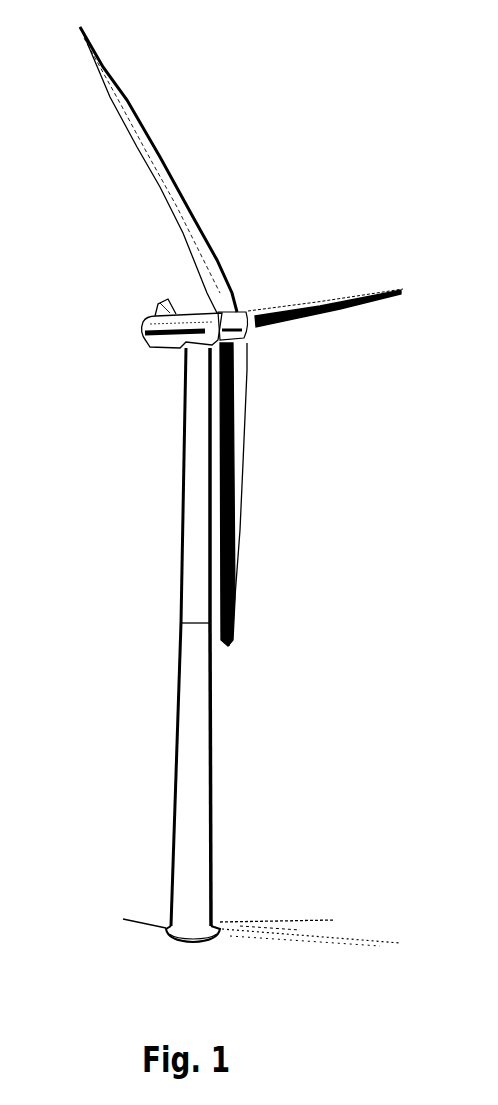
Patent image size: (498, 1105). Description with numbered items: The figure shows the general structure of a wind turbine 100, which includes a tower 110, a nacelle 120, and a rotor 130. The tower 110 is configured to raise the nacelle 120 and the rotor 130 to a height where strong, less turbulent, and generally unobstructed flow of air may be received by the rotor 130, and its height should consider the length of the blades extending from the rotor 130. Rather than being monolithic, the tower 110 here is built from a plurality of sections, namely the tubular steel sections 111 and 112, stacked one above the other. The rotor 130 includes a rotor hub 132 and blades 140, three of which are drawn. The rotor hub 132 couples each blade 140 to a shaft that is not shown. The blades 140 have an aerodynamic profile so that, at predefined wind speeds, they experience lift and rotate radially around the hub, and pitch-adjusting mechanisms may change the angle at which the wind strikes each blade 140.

The wind turbine 100 is at (350, 208).
The tower 110 is at (182, 530).
The tubular steel section 111 is at (177, 772).
The tubular steel section 112 is at (184, 472).
The nacelle 120 is at (135, 330).
The rotor 130 is at (249, 331).
The rotor hub 132 is at (243, 311).
The blade 140 is at (113, 87).